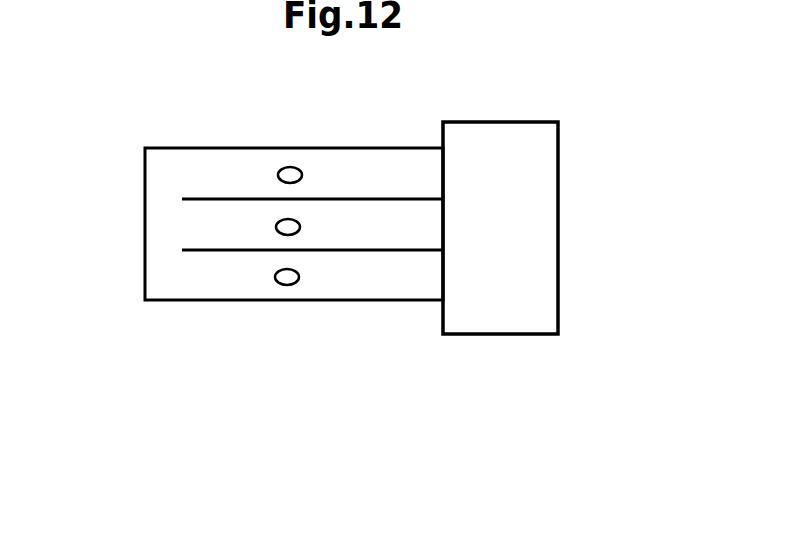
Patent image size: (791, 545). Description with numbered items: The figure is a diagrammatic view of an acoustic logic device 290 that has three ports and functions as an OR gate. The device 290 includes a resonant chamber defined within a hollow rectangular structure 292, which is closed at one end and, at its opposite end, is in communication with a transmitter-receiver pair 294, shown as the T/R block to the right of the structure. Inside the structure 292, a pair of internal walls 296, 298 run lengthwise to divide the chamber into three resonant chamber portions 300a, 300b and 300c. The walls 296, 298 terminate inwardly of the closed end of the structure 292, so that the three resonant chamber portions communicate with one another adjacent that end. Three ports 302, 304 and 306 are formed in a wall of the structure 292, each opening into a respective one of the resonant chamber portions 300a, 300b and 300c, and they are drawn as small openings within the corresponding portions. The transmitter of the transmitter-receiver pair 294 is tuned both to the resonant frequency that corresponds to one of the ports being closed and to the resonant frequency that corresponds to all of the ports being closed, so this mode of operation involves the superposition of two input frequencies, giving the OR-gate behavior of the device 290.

The acoustic logic device 290 is at (134, 108).
The hollow rectangular structure 292 is at (243, 148).
The transmitter-receiver pair 294 is at (559, 262).
The internal wall 296 is at (410, 198).
The internal wall 298 is at (398, 253).
The resonant chamber portion 300a is at (378, 187).
The resonant chamber portion 300b is at (378, 242).
The resonant chamber portion 300c is at (378, 293).
The port 302 is at (292, 166).
The port 304 is at (276, 227).
The port 306 is at (287, 285).